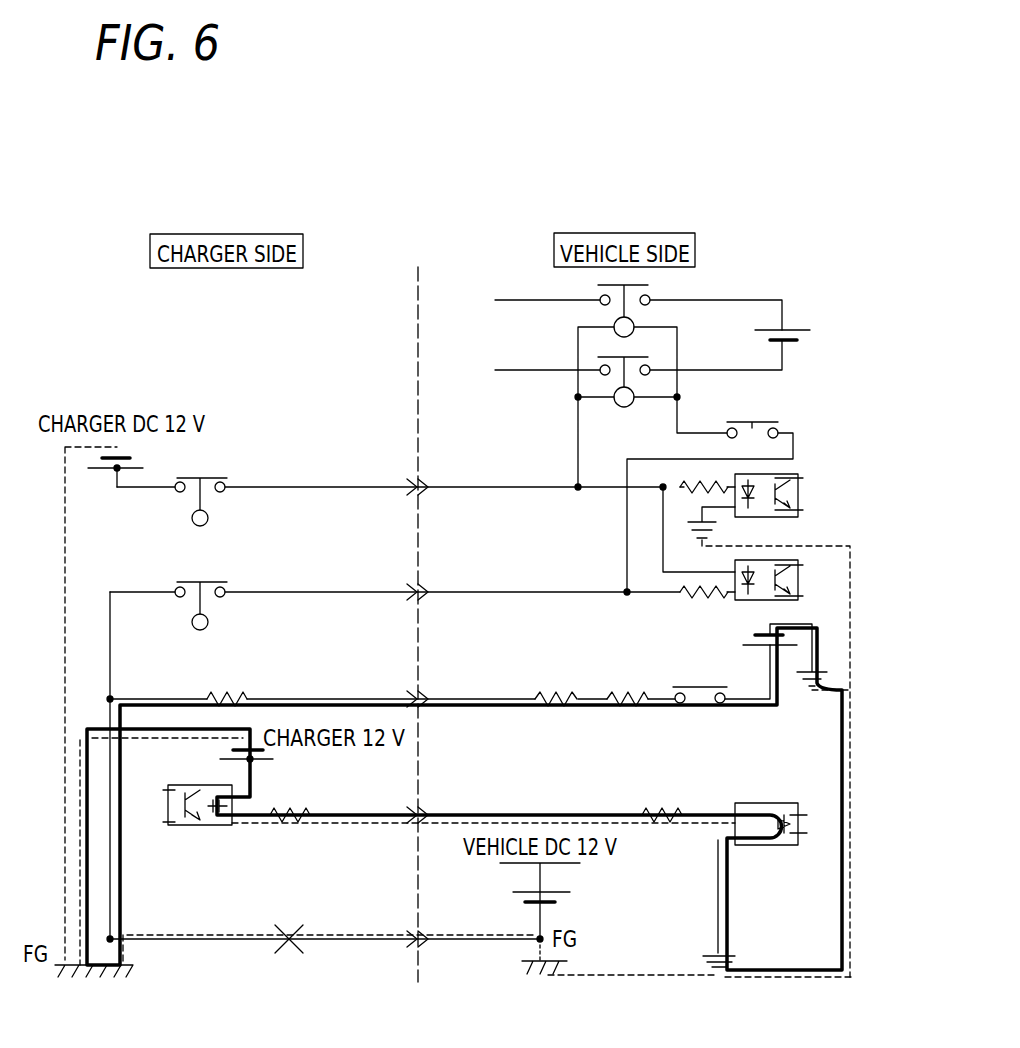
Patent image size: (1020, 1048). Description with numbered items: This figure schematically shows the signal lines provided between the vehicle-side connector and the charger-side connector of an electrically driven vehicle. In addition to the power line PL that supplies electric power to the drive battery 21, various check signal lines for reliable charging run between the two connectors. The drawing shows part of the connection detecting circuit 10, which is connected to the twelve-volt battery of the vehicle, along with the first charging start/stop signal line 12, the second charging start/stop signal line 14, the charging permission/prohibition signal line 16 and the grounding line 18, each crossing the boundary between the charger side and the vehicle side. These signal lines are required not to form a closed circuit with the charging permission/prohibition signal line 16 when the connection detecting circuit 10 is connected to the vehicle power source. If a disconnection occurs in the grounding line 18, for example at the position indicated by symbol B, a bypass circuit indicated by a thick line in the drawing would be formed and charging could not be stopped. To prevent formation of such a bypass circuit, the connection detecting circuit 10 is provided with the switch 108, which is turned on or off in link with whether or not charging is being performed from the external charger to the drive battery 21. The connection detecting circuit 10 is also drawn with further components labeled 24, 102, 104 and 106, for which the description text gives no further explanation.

The connection detecting circuit 10 is at (511, 684).
The first charging start/stop signal line 12 is at (518, 474).
The second charging start/stop signal line 14 is at (533, 579).
The charging permission/prohibition signal line 16 is at (550, 804).
The grounding line 18 is at (482, 924).
The drive battery 21 is at (800, 329).
The resistor 24 is at (242, 696).
The shielded ground wiring 102 is at (788, 650).
The resistor 104 is at (615, 690).
The resistor 106 is at (545, 683).
The switch 108 is at (694, 684).
The power line PL is at (757, 296).
The disconnection position B is at (294, 952).